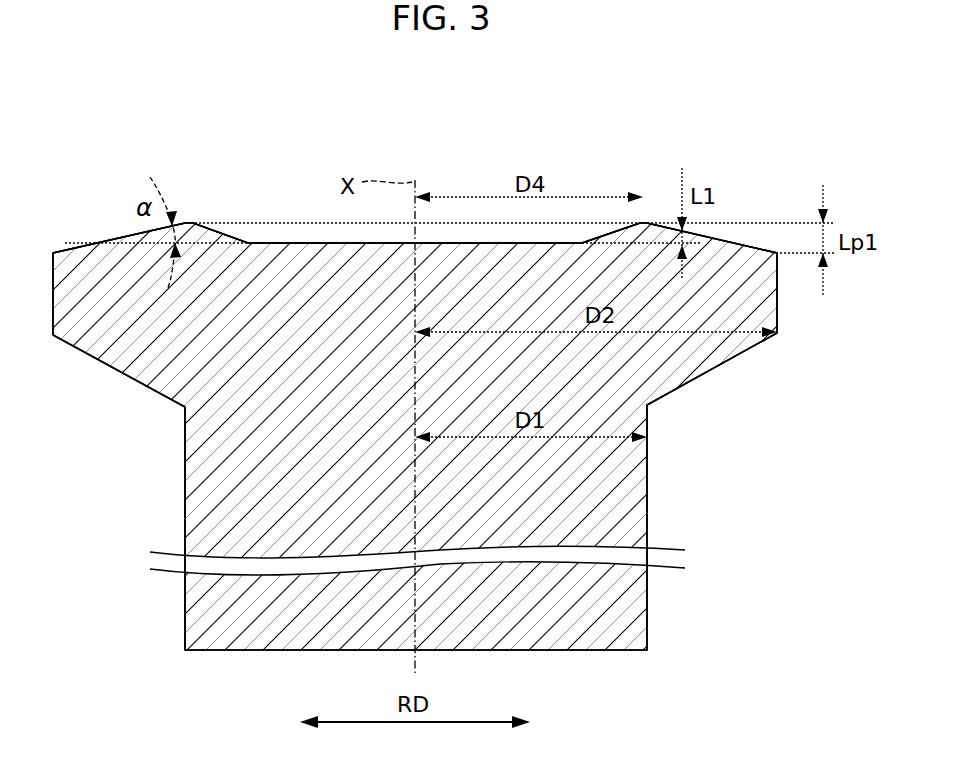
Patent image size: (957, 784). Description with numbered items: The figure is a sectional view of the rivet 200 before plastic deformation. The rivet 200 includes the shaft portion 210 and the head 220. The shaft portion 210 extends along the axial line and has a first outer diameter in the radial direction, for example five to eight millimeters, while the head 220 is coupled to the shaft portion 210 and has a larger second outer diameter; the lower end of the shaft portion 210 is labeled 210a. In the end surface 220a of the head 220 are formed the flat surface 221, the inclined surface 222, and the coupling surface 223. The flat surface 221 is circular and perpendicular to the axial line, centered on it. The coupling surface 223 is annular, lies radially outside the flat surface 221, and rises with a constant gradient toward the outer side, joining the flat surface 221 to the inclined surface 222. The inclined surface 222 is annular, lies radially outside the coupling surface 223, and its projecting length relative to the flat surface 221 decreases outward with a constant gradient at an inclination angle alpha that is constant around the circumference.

The rivet 200 is at (185, 487).
The shaft portion 210 is at (638, 490).
The bottom surface of shaft portion 210a is at (620, 652).
The head 220 is at (715, 357).
The end surface 220a is at (289, 242).
The flat surface 221 is at (582, 240).
The inclined surface 222 is at (777, 300).
The coupling surface 223 is at (643, 222).